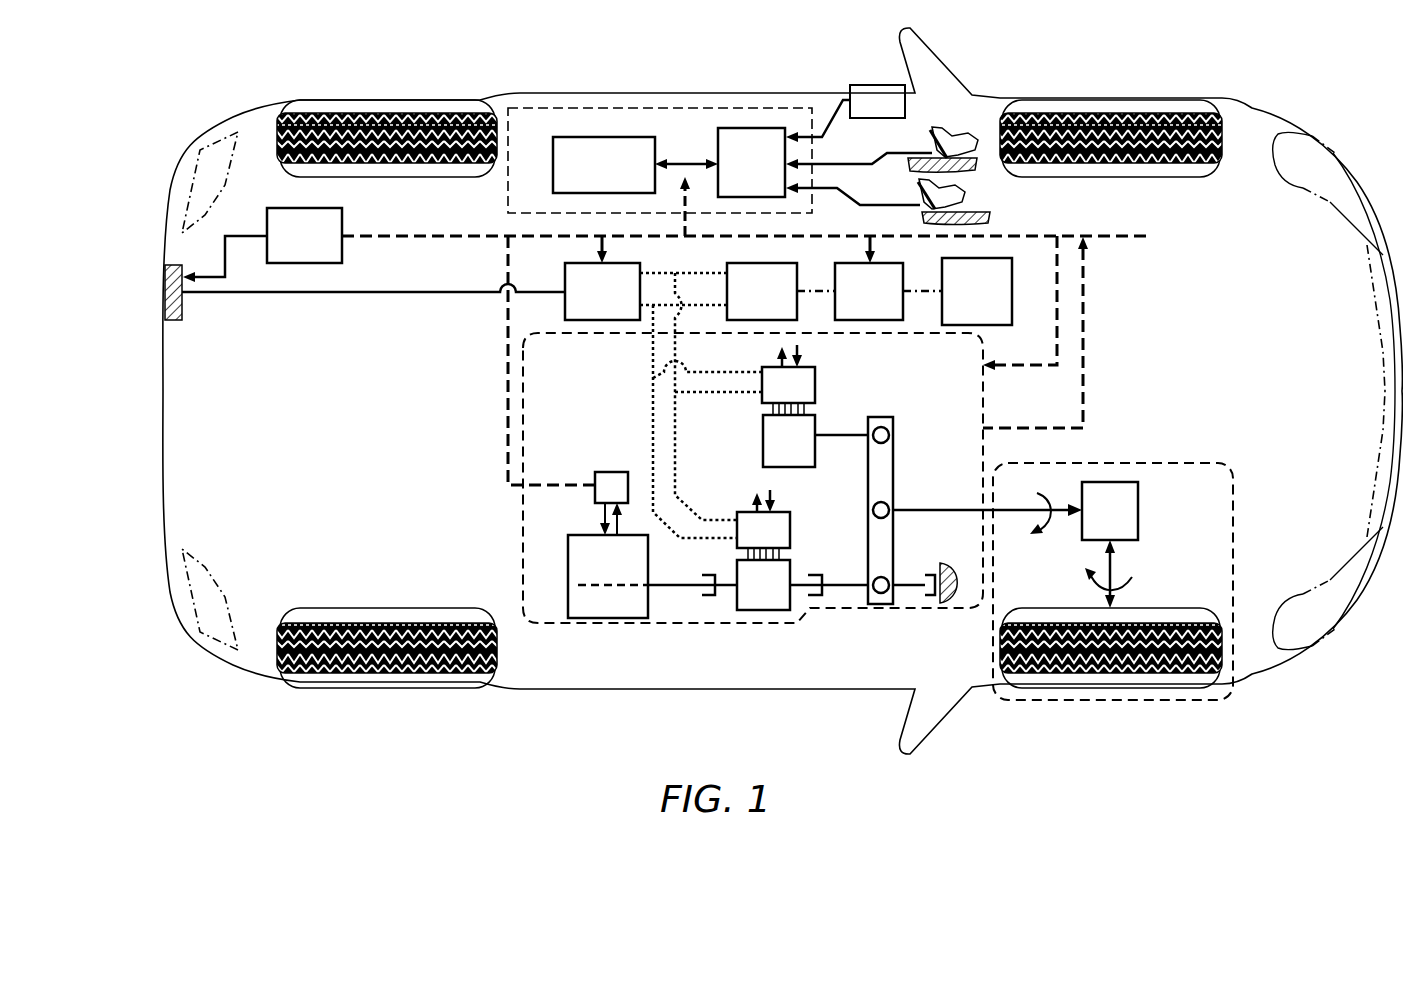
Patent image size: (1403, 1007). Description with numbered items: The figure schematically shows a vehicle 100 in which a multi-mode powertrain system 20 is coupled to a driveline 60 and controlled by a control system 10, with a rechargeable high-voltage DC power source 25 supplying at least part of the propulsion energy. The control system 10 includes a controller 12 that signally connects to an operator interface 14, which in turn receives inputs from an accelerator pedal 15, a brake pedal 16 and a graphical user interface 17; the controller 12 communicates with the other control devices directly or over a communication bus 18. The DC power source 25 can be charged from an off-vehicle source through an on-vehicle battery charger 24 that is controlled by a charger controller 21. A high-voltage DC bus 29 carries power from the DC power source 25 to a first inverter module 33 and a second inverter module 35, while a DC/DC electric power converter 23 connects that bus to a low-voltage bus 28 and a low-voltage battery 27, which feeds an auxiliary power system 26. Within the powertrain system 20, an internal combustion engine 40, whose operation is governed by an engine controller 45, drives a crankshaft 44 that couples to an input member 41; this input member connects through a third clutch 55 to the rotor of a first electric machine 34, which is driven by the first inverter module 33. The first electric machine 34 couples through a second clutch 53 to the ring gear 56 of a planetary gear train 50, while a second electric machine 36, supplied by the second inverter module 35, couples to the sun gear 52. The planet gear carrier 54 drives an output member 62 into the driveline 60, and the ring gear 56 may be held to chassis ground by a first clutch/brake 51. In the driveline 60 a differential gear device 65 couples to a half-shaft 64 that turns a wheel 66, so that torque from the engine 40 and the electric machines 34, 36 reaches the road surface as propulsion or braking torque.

The vehicle 100 is at (1165, 208).
The control system 10 is at (517, 136).
The controller 12 is at (591, 177).
The operator interface 14 is at (738, 175).
The accelerator pedal 15 is at (920, 193).
The brake pedal 16 is at (937, 150).
The graphical user interface 17 is at (865, 113).
The communication bus 18 is at (425, 226).
The multi-mode powertrain system 20 is at (995, 382).
The charger controller 21 is at (291, 248).
The DC/DC electric power converter 23 is at (749, 304).
The on-vehicle battery charger 24 is at (165, 290).
The DC power source 25 is at (589, 304).
The auxiliary power system 26 is at (964, 304).
The low-voltage battery 27 is at (856, 304).
The low-voltage bus 28 is at (805, 291).
The high-voltage DC bus 29 is at (712, 305).
The first inverter module 33 is at (792, 530).
The first electric machine 34 is at (760, 612).
The second inverter module 35 is at (817, 387).
The second electric machine 36 is at (795, 467).
The internal combustion engine 40 is at (612, 532).
The input member 41 is at (727, 590).
The crankshaft 44 is at (610, 583).
The engine controller 45 is at (615, 472).
The gear train 50 is at (913, 548).
The first clutch/brake 51 is at (928, 597).
The sun gear 52 is at (893, 430).
The second clutch 53 is at (817, 597).
The planet gear carrier 54 is at (893, 507).
The third clutch 55 is at (710, 598).
The ring gear 56 is at (893, 582).
The driveline 60 is at (1063, 542).
The output member 62 is at (1012, 507).
The half-shaft 64 is at (1125, 566).
The differential gear device 65 is at (1097, 523).
The wheel 66 is at (1079, 598).